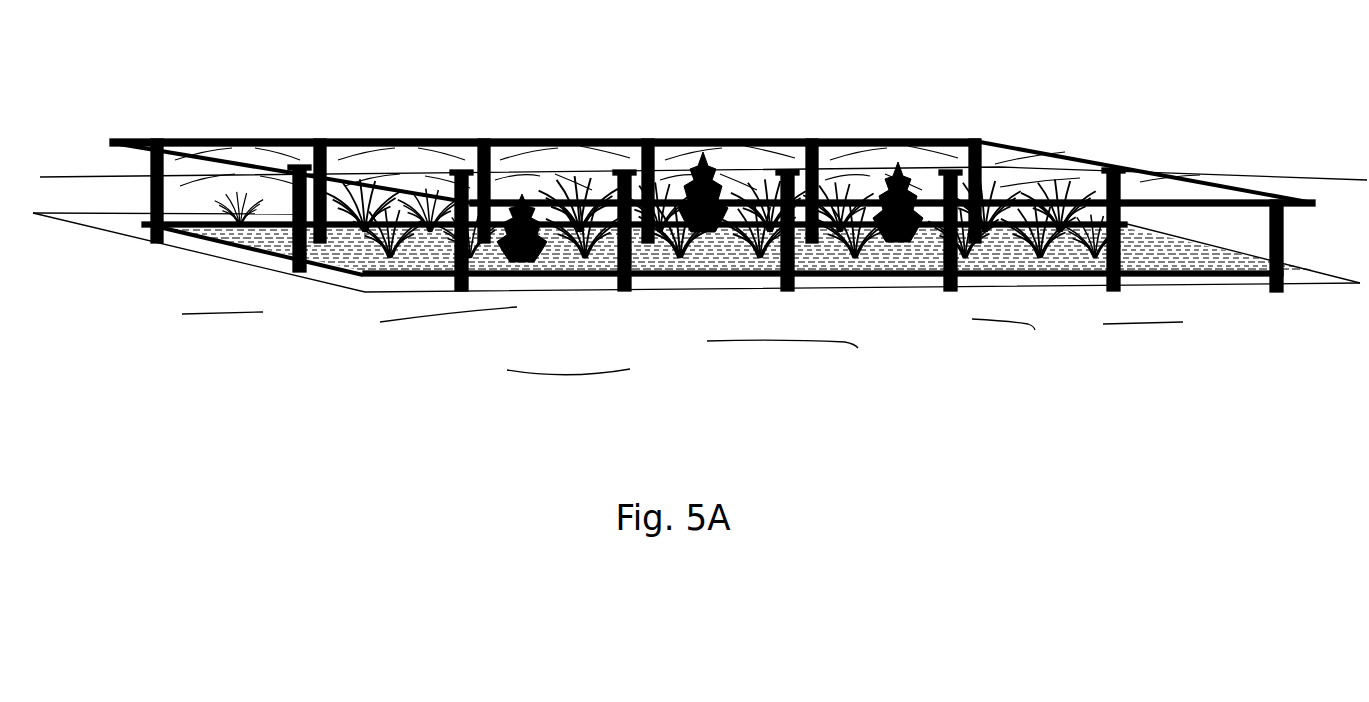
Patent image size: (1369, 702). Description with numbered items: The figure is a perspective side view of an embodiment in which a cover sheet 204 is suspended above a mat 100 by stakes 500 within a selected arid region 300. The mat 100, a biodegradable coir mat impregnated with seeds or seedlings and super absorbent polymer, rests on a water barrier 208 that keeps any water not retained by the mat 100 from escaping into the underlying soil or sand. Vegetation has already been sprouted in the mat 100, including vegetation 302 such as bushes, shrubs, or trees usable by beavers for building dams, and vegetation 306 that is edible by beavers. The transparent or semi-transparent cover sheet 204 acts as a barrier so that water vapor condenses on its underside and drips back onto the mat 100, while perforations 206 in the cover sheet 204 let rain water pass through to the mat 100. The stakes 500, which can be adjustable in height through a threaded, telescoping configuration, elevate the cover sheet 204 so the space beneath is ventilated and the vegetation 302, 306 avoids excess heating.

The mat 100 is at (1183, 273).
The cover sheet 204 is at (1035, 150).
The perforations 206 is at (307, 165).
The water barrier 208 is at (880, 290).
The selected region 300 is at (602, 258).
The vegetation 302 is at (556, 247).
The vegetation 306 is at (222, 192).
The stakes 500 is at (1283, 222).